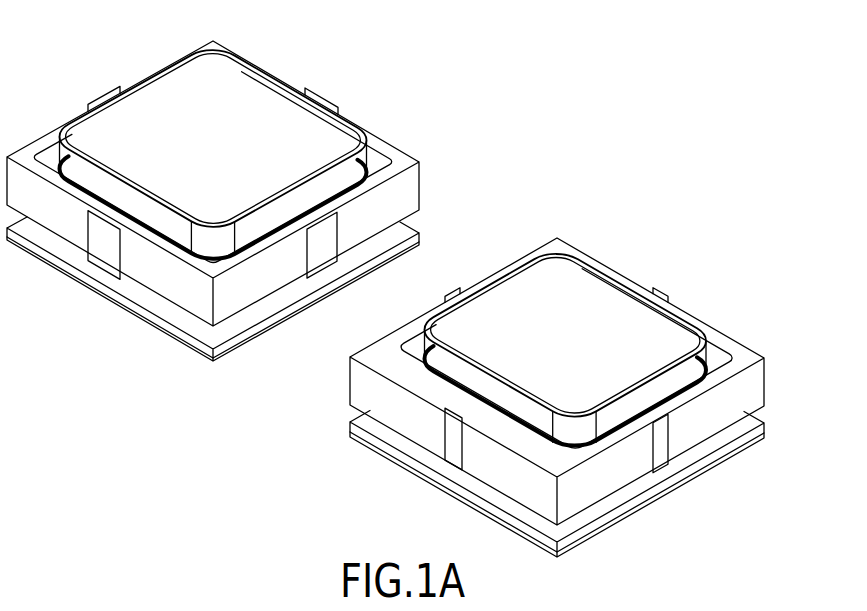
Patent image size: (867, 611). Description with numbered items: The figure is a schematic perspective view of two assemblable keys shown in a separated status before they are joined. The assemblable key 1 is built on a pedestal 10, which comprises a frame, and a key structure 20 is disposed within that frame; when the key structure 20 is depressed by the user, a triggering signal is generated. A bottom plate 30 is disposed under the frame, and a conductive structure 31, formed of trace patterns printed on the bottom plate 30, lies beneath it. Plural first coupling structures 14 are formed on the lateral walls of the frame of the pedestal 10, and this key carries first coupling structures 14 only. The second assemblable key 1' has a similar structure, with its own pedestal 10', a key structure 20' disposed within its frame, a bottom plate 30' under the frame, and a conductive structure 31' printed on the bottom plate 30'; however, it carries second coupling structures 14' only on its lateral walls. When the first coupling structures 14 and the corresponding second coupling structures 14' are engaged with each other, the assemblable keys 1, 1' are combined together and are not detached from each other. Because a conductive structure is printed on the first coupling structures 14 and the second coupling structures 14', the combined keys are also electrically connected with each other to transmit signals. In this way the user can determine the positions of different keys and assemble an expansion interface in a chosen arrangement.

The assemblable key 1 is at (236, 188).
The pedestal 10 is at (236, 183).
The first coupling structures 14 is at (214, 187).
The key structure 20 is at (213, 148).
The bottom plate 30 is at (213, 292).
The conductive structure 31 is at (213, 307).
The assemblable key 1' is at (573, 385).
The pedestal 10' is at (573, 381).
The second coupling structures 14' is at (560, 386).
The key structure 20' is at (566, 344).
The bottom plate 30' is at (557, 487).
The conductive structure 31' is at (557, 501).